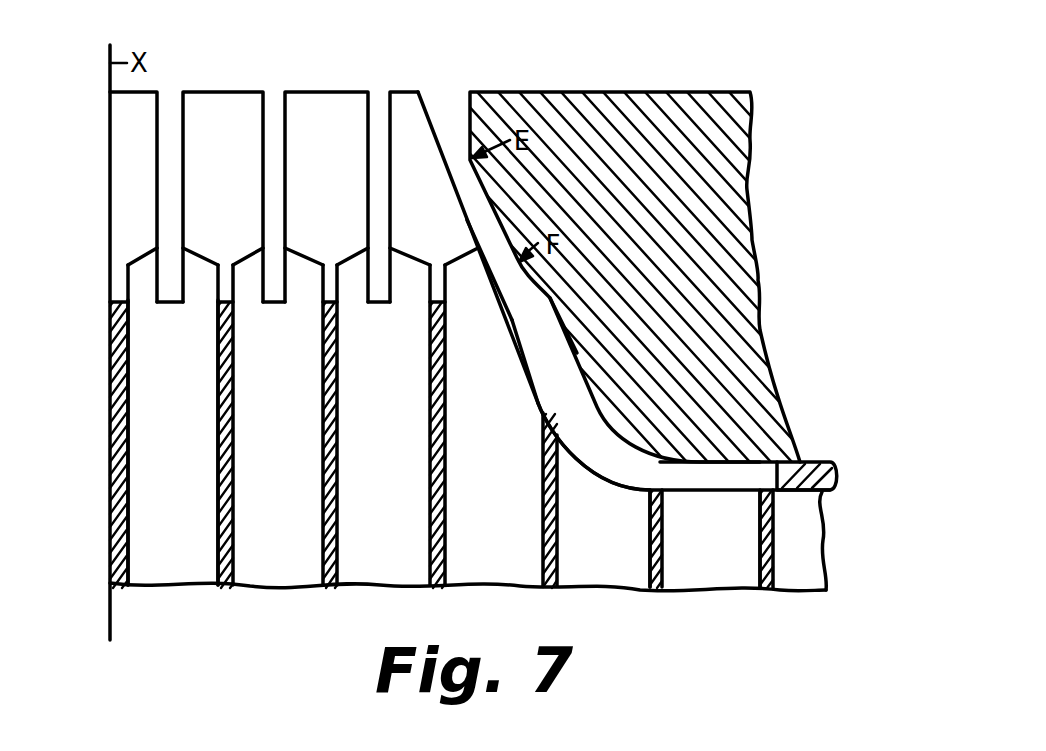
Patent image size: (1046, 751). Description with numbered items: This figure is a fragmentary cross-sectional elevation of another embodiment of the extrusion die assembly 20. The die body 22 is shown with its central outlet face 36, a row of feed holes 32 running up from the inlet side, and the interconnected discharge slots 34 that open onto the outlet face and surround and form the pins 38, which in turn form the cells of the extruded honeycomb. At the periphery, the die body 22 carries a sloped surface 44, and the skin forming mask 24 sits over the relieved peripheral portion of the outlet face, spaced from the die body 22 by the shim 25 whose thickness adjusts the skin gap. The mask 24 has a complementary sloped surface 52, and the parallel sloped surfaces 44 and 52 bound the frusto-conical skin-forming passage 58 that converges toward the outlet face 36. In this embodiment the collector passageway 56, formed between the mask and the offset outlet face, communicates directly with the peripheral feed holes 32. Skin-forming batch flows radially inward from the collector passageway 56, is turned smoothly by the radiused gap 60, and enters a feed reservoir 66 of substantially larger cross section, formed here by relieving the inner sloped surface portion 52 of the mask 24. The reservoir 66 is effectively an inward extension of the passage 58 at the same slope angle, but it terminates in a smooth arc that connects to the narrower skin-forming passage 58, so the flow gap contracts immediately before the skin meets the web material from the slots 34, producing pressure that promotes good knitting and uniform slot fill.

The extrusion die assembly 20 is at (703, 85).
The die body 22 is at (120, 393).
The skin forming mask 24 is at (651, 108).
The shim 25 is at (842, 479).
The feed holes 32 is at (345, 421).
The discharge slots 34 is at (168, 105).
The central outlet face 36 is at (327, 90).
The pins 38 is at (300, 157).
The sloped surface 44 is at (514, 320).
The sloped surface 52 is at (560, 332).
The collector passageway 56 is at (707, 473).
The skin-forming passage 58 is at (475, 193).
The radiused gap 60 is at (610, 452).
The feed reservoir 66 is at (537, 356).